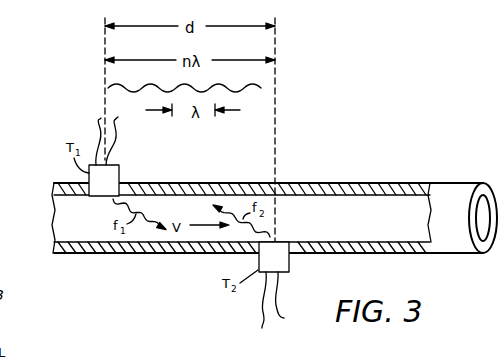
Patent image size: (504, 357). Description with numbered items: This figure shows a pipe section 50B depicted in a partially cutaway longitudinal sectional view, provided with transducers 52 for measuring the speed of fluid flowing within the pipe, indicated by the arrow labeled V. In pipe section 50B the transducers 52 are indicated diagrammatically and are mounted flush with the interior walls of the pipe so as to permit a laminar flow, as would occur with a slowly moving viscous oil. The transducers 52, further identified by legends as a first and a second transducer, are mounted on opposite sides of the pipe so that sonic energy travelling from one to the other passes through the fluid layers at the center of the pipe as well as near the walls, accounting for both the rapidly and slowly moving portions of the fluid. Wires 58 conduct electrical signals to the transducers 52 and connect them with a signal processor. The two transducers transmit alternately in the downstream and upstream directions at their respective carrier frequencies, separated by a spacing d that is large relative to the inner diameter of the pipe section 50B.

The pipe section 50B is at (187, 183).
The transducer 52 is at (118, 172).
The wires 58 is at (110, 134).